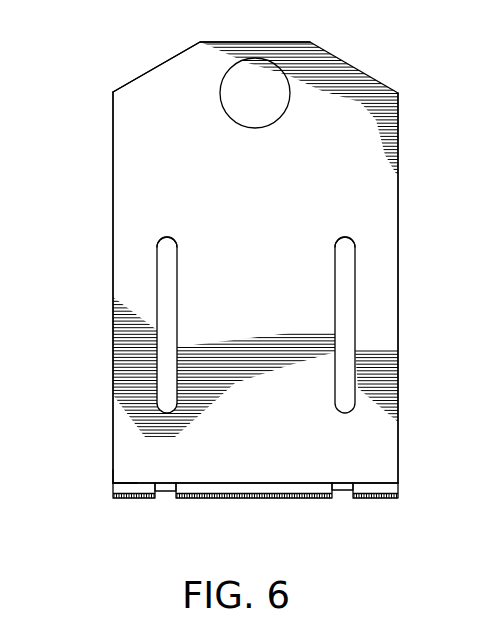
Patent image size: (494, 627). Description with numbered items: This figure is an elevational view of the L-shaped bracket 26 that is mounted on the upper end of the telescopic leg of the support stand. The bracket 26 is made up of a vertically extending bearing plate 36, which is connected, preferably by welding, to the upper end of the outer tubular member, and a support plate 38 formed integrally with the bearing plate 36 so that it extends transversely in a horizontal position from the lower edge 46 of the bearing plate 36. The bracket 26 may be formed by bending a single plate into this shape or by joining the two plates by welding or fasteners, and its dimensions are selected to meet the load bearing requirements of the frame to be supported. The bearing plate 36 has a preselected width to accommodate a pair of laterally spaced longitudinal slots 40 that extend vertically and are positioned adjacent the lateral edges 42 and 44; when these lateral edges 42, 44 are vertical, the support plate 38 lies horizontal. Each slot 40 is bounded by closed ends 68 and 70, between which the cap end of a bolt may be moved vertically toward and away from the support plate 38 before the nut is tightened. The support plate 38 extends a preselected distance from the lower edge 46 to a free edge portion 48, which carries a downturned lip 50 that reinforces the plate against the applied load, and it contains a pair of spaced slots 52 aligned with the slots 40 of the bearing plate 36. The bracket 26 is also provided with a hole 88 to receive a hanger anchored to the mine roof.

The L-shaped bracket 26 is at (80, 222).
The bearing plate 36 is at (113, 113).
The support plate 38 is at (305, 483).
The longitudinal slots 40 is at (160, 278).
The lateral edge 42 is at (113, 170).
The lateral edge 44 is at (398, 188).
The lower edge 46 is at (137, 483).
The free edge portion 48 is at (333, 498).
The downturned lip 50 is at (222, 498).
The slots 52 is at (157, 498).
The closed end 68 is at (168, 238).
The closed end 70 is at (170, 410).
The hole 88 is at (224, 80).